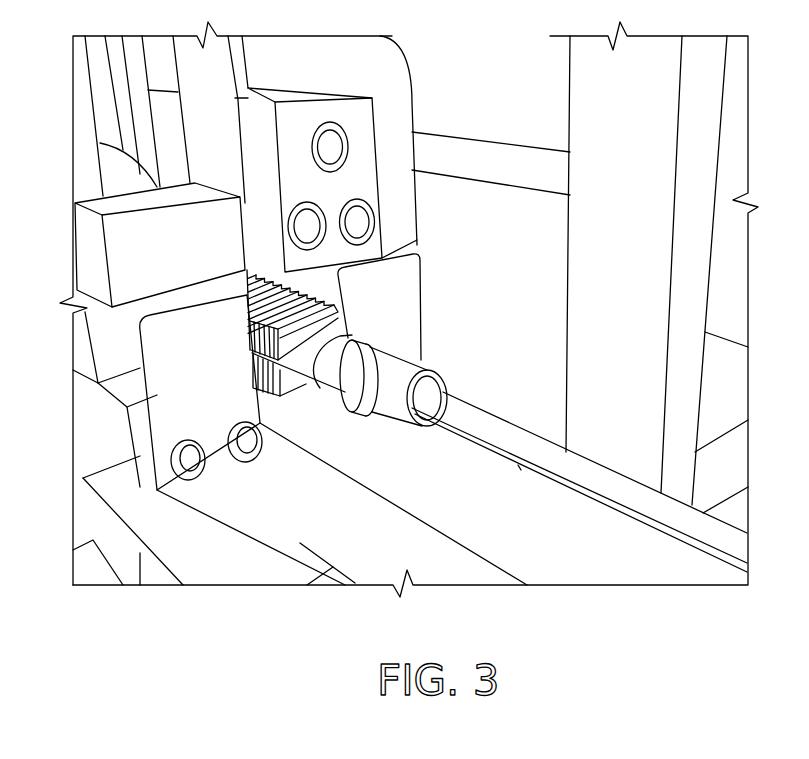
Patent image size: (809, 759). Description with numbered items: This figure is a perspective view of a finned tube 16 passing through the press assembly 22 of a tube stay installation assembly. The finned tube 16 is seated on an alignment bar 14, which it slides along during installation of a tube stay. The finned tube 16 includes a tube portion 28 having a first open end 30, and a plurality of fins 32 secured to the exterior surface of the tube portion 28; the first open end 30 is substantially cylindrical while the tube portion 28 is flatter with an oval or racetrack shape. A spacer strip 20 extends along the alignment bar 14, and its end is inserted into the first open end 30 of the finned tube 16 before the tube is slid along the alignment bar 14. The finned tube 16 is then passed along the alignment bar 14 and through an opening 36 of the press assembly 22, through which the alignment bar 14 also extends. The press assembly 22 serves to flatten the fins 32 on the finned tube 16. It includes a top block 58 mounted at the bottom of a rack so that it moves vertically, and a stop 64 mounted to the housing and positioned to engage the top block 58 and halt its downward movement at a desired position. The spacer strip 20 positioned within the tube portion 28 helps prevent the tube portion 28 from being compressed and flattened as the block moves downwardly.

The alignment bar 14 is at (368, 586).
The finned tube 16 is at (355, 396).
The spacer strip 20 is at (537, 470).
The press assembly 22 is at (105, 232).
The tube portion 28 is at (253, 366).
The first open end 30 is at (433, 398).
The fins 32 is at (250, 318).
The opening 36 is at (267, 306).
The top block 58 is at (100, 272).
The stop 64 is at (118, 438).